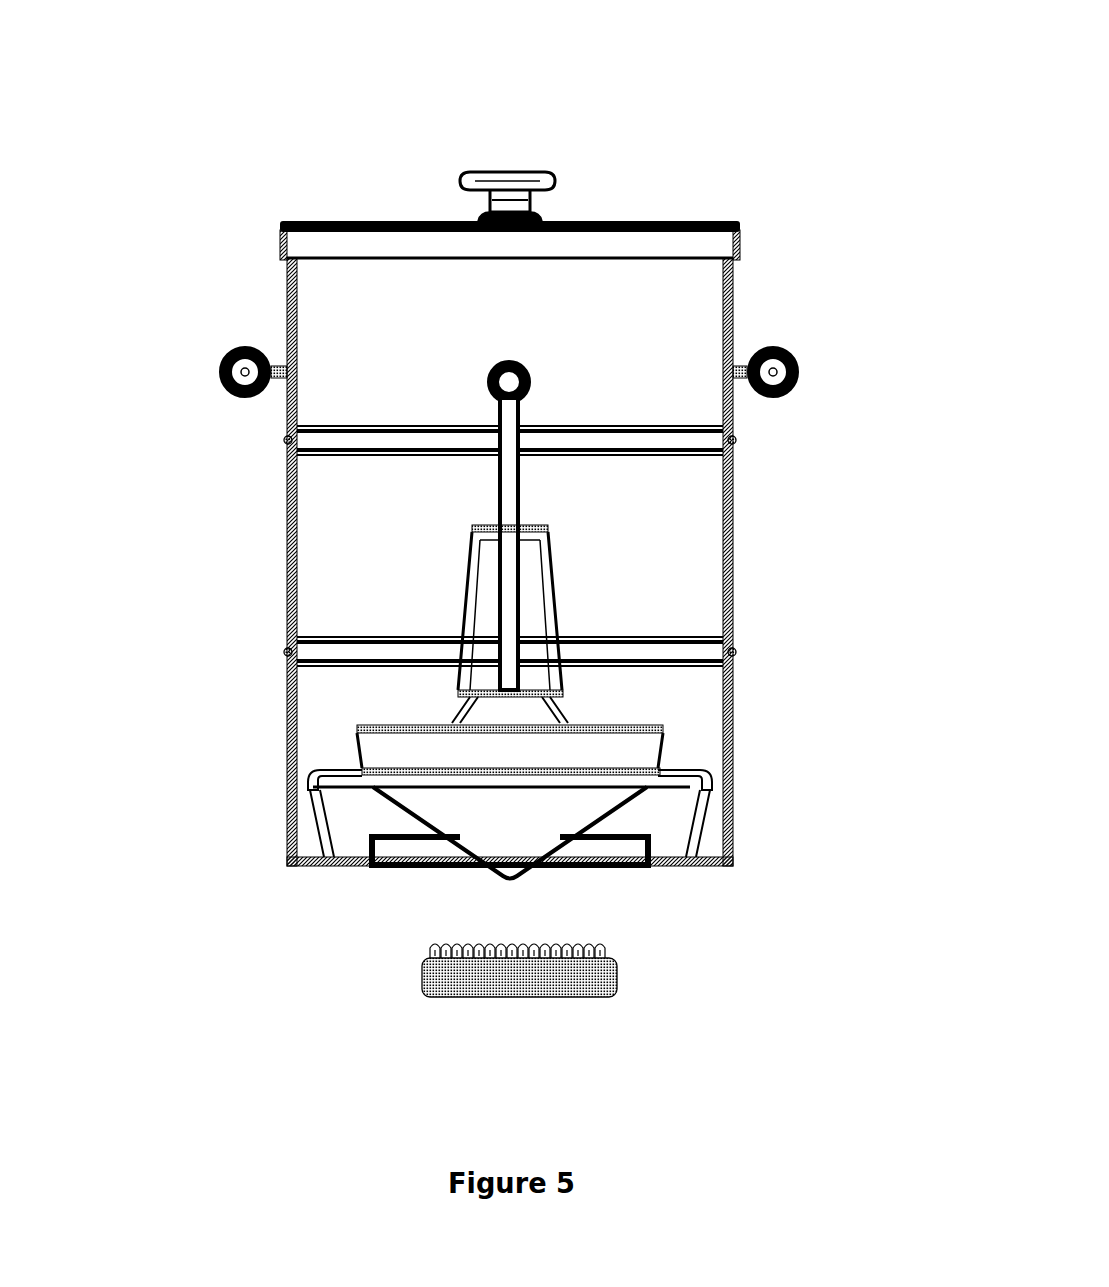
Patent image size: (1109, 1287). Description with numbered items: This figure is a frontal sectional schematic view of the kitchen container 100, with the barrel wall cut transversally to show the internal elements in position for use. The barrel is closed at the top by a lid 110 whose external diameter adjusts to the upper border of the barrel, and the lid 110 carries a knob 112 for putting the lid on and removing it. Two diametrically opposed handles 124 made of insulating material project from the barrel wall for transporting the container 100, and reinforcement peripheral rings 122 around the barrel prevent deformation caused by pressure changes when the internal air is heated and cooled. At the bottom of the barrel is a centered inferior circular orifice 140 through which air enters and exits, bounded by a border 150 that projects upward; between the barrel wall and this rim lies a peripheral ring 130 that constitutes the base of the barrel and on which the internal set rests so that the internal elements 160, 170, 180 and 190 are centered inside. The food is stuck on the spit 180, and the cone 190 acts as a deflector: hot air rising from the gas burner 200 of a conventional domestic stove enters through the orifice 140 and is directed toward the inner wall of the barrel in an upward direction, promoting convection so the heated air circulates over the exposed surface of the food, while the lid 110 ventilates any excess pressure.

The container 100 is at (186, 172).
The lid 110 is at (687, 211).
The knob 112 is at (553, 148).
The reinforcement peripheral rings 122 is at (272, 458).
The handles 124 is at (811, 359).
The peripheral ring 130 is at (676, 872).
The inferior circular orifice 140 is at (409, 876).
The border 150 is at (384, 857).
The internal element 160 is at (300, 785).
The internal element 170 is at (653, 738).
The spit 180 is at (565, 592).
The cone 190 is at (562, 821).
The gas burner 200 is at (556, 999).